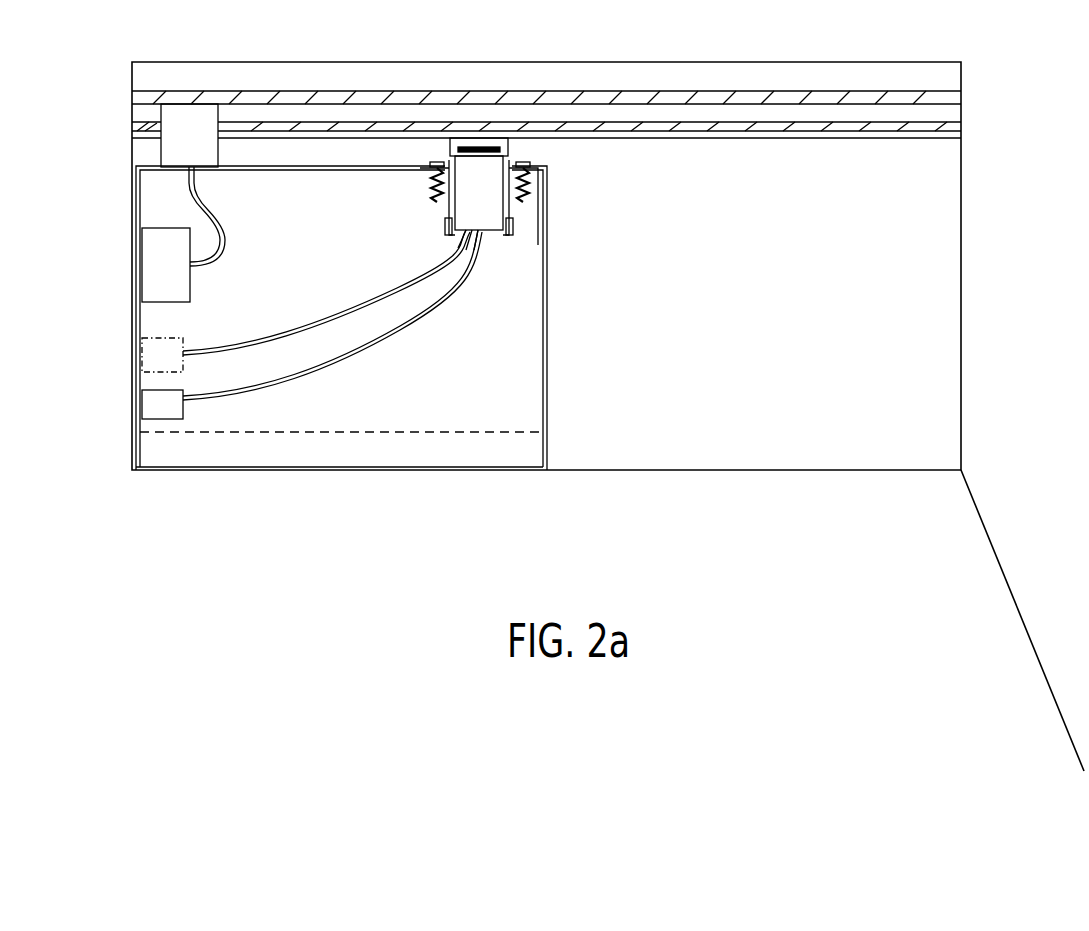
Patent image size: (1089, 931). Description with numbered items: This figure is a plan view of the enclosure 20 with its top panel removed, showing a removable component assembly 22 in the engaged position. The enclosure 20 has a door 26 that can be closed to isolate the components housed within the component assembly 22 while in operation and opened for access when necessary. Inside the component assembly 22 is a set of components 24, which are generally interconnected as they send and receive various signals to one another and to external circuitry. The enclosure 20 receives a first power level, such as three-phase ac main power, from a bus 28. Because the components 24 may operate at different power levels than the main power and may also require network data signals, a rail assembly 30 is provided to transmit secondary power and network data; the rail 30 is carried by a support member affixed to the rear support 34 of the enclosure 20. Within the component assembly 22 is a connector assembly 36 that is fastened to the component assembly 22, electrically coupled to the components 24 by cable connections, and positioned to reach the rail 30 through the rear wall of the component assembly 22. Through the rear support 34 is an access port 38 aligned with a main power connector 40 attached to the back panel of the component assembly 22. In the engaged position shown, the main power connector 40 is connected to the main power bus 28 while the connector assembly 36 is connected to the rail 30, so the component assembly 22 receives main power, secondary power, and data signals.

The enclosure 20 is at (724, 40).
The component assembly 22 is at (442, 408).
The components 24 is at (140, 263).
The door 26 is at (982, 518).
The bus 28 is at (259, 88).
The rail assembly 30 is at (480, 138).
The rear support 34 is at (962, 131).
The connector assembly 36 is at (492, 206).
The access port 38 is at (148, 128).
The main power connector 40 is at (177, 153).